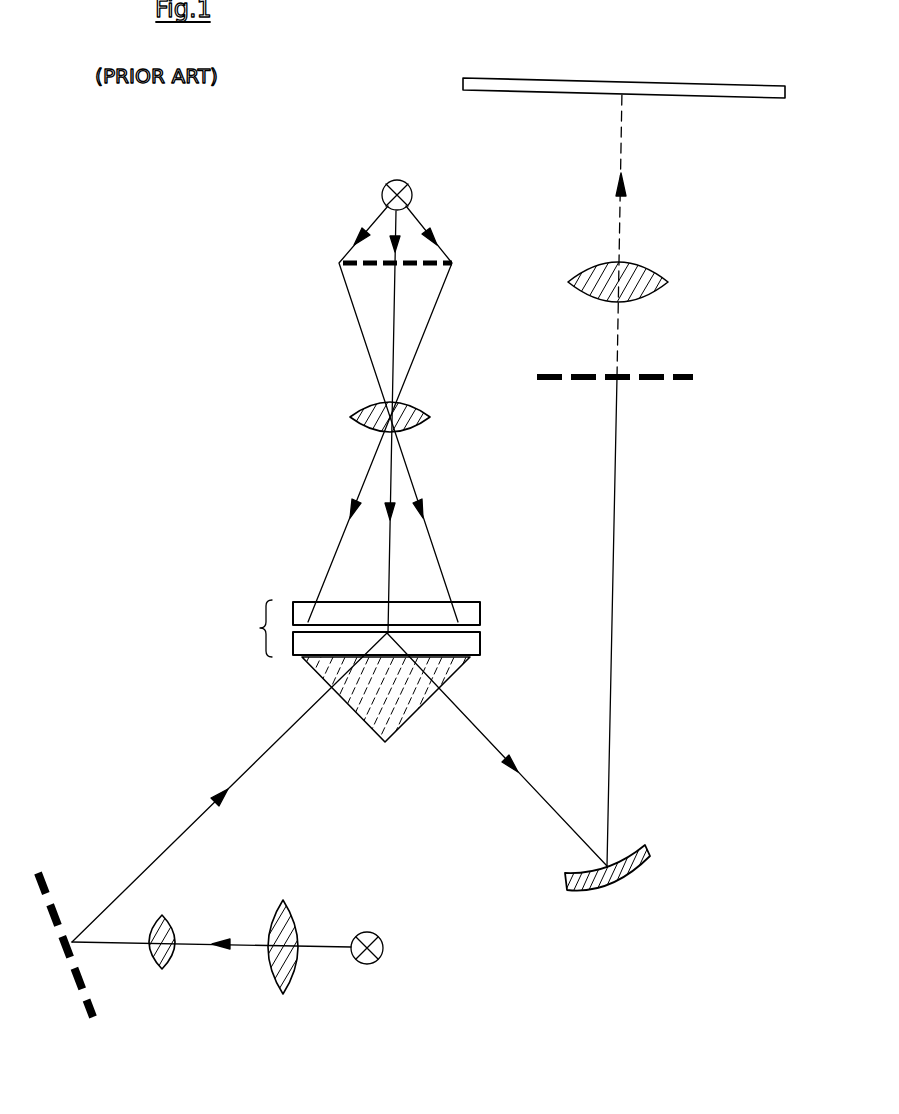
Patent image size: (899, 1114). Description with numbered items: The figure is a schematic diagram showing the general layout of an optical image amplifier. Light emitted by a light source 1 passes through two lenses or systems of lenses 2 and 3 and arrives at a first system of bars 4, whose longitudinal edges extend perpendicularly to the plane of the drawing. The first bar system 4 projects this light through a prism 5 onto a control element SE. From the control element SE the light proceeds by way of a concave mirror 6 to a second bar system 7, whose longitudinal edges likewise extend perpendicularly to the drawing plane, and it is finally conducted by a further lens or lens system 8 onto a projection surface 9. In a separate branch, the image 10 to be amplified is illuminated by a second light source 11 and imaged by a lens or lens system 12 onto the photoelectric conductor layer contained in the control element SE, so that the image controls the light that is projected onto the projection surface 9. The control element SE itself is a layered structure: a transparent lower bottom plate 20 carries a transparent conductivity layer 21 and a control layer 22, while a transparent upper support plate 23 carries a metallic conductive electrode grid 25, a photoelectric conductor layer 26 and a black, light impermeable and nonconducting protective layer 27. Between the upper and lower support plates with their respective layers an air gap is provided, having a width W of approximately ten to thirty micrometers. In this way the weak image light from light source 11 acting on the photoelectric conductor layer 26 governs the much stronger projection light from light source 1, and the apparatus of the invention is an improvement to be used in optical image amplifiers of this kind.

The light source 1 is at (363, 962).
The lens or system of lenses 2 is at (292, 975).
The lens or system of lenses 3 is at (165, 963).
The first system of bars 4 is at (82, 1010).
The prism 5 is at (400, 720).
The concave mirror 6 is at (637, 856).
The second bar system 7 is at (648, 385).
The lens or lens system 8 is at (643, 278).
The projection surface 9 is at (712, 96).
The image 10 is at (452, 266).
The light source 11 is at (383, 194).
The lens or lens system 12 is at (373, 410).
The transparent lower bottom plate 20 is at (441, 660).
The transparent conductivity layer 21 is at (441, 660).
The control layer 22 is at (477, 648).
The transparent upper support plate 23 is at (448, 602).
The metallic conductive electrode grid 25 is at (448, 602).
The photoelectric conductor layer 26 is at (448, 602).
The protective layer 27 is at (467, 617).
The air gap width W is at (478, 630).
The control element SE is at (420, 633).